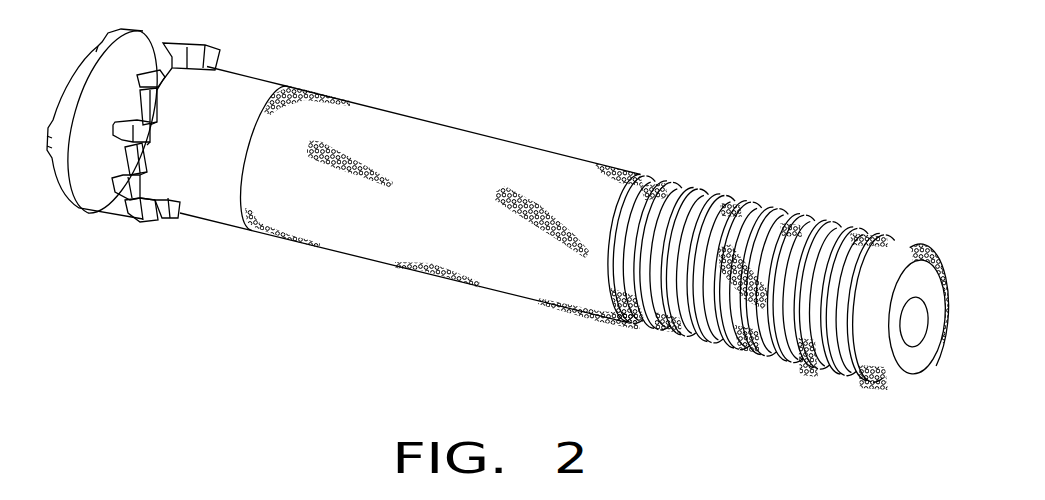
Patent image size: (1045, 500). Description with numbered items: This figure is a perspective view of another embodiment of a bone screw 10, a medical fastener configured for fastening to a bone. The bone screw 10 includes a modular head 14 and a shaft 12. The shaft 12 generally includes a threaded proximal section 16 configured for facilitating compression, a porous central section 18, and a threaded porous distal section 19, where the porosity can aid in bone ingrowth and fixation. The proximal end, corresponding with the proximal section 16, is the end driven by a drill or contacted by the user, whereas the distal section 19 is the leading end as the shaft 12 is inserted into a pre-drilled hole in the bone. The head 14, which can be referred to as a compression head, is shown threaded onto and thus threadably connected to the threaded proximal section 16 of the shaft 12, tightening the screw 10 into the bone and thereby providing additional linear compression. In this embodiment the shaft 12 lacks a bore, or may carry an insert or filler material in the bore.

The bone screw 10 is at (491, 233).
The shaft 12 is at (599, 320).
The head 14 is at (92, 192).
The threaded proximal section 16 is at (203, 218).
The porous central section 18 is at (326, 243).
The threaded porous distal section 19 is at (785, 360).